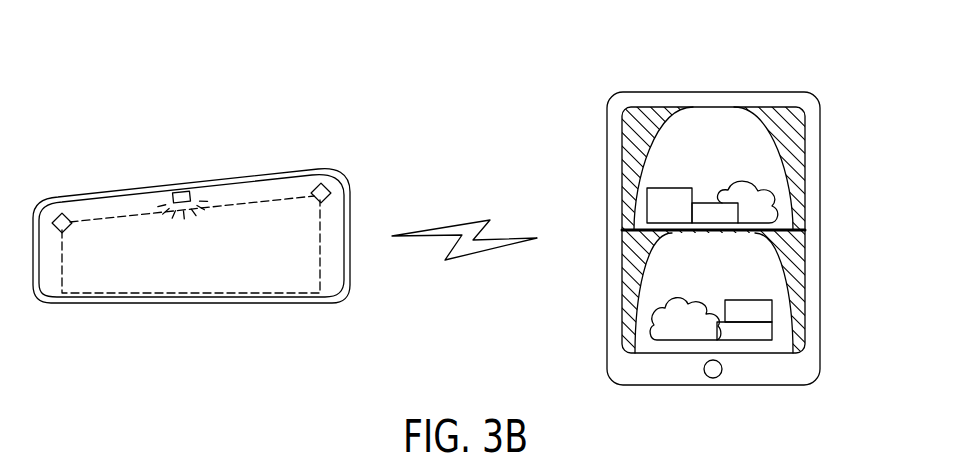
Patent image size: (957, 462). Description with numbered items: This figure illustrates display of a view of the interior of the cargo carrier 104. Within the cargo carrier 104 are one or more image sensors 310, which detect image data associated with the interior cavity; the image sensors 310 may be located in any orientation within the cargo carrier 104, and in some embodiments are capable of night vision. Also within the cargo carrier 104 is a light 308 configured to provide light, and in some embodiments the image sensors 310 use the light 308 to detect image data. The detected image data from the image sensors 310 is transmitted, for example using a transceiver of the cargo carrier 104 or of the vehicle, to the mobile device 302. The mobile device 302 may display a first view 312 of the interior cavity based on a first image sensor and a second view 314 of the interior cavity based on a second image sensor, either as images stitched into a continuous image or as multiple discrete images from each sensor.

The cargo carrier 104 is at (271, 172).
The light 308 is at (182, 192).
The image sensors 310 is at (64, 213).
The mobile device 302 is at (820, 280).
The first view 312 is at (715, 138).
The second view 314 is at (687, 287).